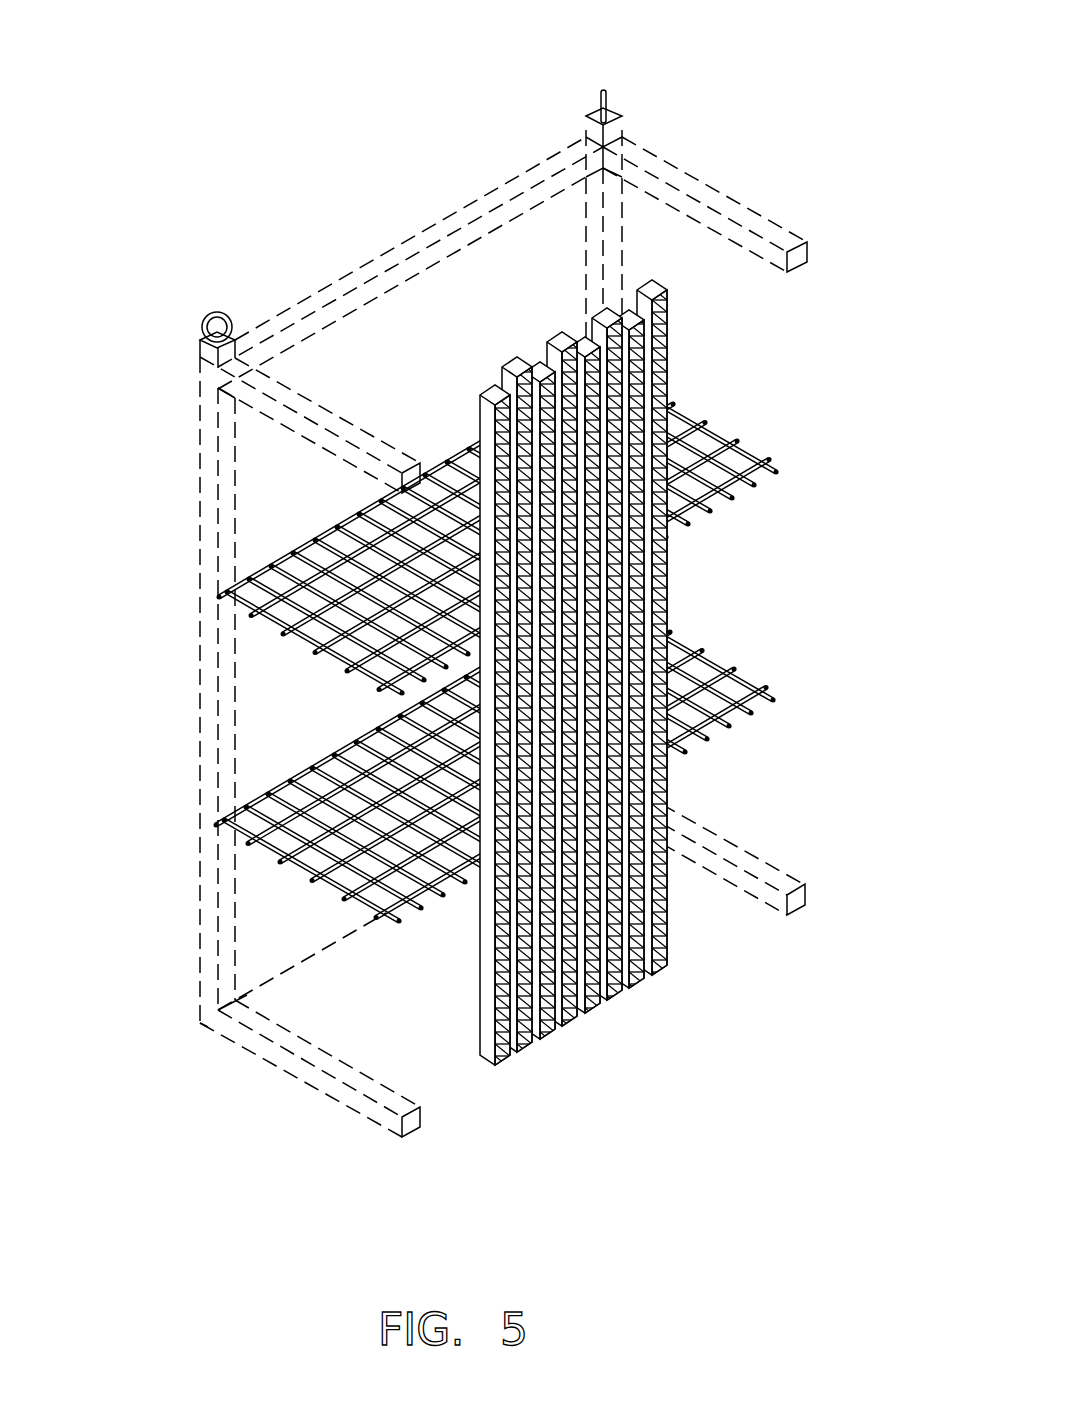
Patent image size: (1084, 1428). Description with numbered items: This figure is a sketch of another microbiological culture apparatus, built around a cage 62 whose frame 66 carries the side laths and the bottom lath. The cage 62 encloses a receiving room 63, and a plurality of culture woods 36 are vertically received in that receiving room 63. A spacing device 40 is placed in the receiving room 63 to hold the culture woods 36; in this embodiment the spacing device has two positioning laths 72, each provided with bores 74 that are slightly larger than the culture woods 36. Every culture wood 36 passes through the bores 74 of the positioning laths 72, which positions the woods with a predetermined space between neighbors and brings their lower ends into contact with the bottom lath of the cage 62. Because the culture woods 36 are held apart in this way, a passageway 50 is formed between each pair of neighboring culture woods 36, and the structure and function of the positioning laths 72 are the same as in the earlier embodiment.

The culture woods 36 is at (673, 672).
The spacing device 40 is at (499, 648).
The passageway 50 is at (648, 948).
The cage 62 is at (727, 208).
The receiving room 63 is at (507, 571).
The frame 66 is at (325, 303).
The positioning laths 72 is at (785, 470).
The bores 74 is at (800, 700).